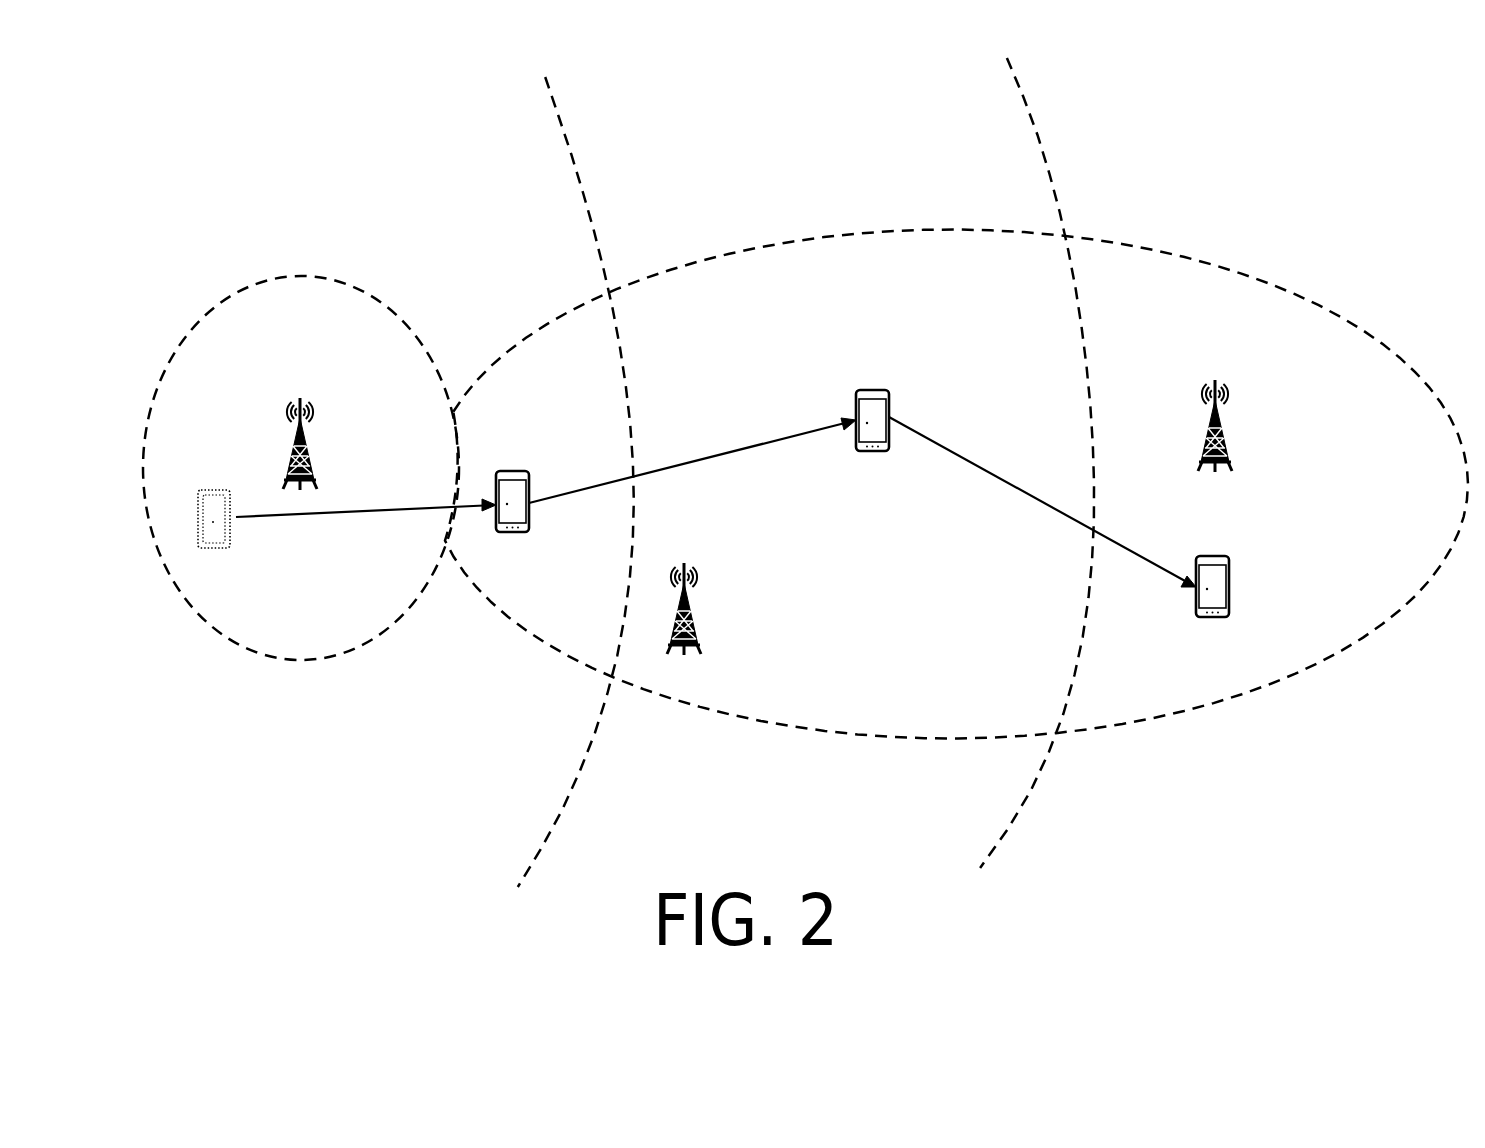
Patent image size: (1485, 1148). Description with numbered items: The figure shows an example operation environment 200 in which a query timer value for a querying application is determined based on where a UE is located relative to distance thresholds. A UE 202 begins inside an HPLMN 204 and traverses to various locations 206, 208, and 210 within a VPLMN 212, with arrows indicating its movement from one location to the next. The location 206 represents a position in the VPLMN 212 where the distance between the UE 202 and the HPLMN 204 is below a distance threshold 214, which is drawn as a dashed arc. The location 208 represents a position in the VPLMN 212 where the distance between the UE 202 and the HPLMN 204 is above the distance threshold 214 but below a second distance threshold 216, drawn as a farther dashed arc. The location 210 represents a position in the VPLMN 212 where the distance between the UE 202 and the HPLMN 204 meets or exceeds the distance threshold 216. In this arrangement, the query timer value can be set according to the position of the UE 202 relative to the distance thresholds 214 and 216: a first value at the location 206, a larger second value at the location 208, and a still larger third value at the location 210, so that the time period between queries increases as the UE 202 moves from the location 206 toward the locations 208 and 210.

The operation environment 200 is at (199, 131).
The UE 202 is at (211, 549).
The HPLMN 204 is at (385, 305).
The location 206 is at (521, 548).
The location 208 is at (884, 474).
The location 210 is at (1209, 636).
The VPLMN 212 is at (800, 245).
The distance threshold 214 is at (588, 196).
The distance threshold 216 is at (1045, 158).